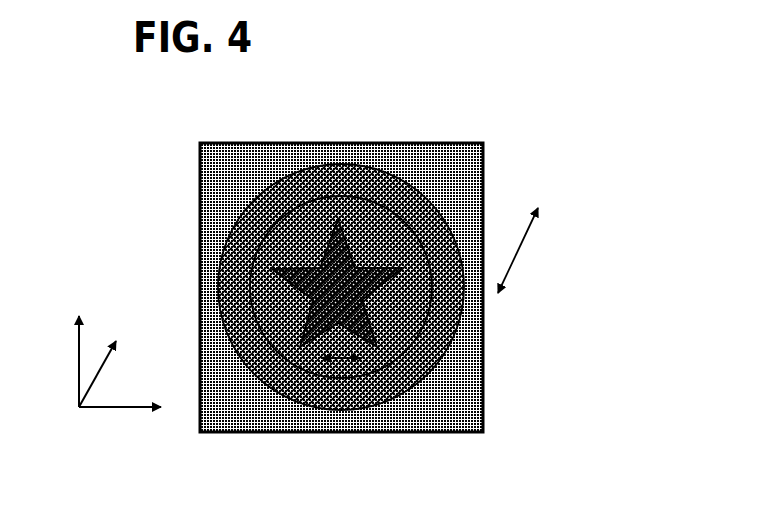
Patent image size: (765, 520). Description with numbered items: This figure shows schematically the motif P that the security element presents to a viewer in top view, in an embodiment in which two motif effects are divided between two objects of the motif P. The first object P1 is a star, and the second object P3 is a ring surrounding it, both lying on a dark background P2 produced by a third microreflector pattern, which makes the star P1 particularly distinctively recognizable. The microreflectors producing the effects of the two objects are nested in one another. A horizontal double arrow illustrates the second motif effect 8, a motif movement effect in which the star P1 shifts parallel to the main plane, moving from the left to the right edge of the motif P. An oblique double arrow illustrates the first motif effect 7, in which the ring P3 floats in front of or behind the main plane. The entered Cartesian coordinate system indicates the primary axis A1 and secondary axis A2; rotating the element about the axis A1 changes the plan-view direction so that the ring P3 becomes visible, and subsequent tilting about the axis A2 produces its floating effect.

The motif P is at (416, 289).
The star P1 is at (361, 262).
The background P2 is at (478, 405).
The ring P3 is at (461, 330).
The first motif effect 7 is at (523, 250).
The second motif effect 8 is at (343, 360).
The primary axis A1 is at (97, 410).
The secondary axis A2 is at (76, 388).